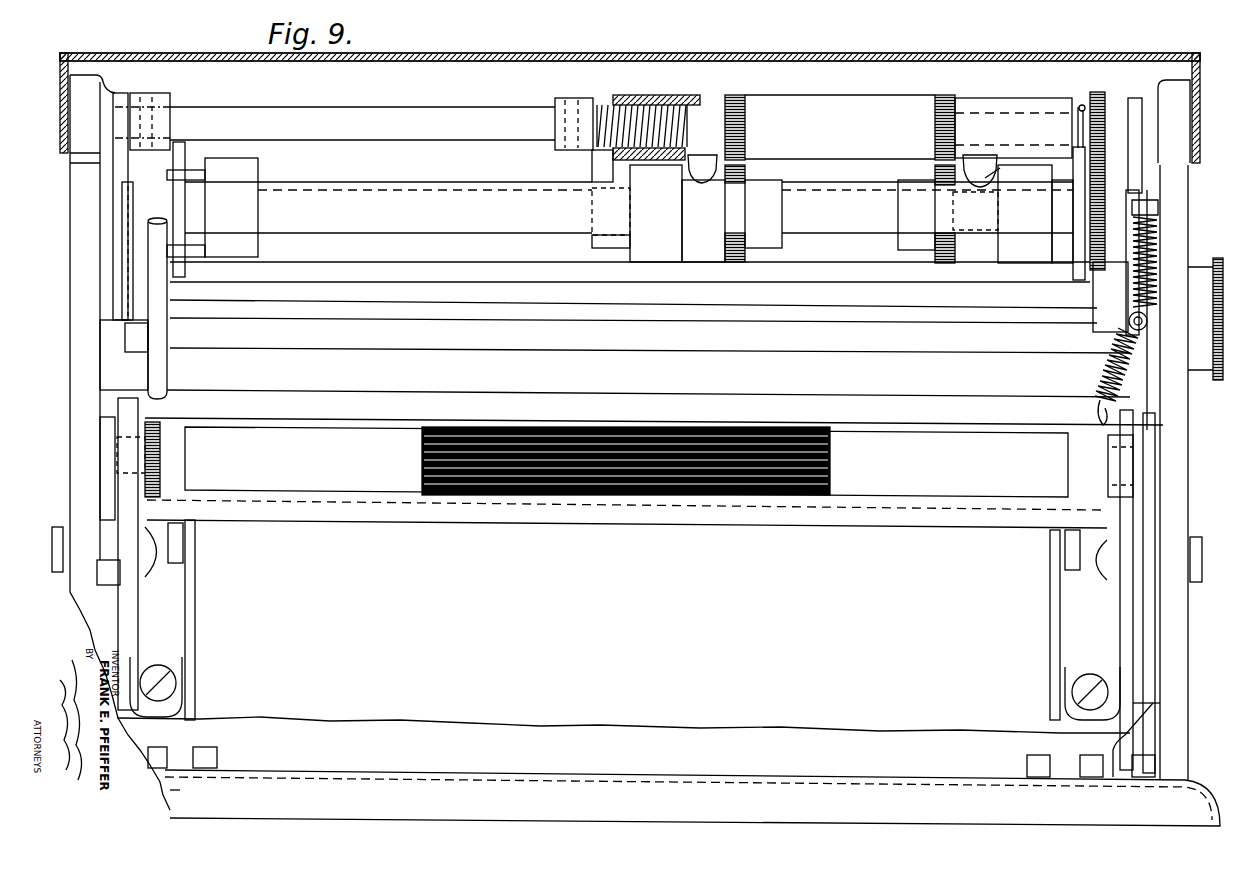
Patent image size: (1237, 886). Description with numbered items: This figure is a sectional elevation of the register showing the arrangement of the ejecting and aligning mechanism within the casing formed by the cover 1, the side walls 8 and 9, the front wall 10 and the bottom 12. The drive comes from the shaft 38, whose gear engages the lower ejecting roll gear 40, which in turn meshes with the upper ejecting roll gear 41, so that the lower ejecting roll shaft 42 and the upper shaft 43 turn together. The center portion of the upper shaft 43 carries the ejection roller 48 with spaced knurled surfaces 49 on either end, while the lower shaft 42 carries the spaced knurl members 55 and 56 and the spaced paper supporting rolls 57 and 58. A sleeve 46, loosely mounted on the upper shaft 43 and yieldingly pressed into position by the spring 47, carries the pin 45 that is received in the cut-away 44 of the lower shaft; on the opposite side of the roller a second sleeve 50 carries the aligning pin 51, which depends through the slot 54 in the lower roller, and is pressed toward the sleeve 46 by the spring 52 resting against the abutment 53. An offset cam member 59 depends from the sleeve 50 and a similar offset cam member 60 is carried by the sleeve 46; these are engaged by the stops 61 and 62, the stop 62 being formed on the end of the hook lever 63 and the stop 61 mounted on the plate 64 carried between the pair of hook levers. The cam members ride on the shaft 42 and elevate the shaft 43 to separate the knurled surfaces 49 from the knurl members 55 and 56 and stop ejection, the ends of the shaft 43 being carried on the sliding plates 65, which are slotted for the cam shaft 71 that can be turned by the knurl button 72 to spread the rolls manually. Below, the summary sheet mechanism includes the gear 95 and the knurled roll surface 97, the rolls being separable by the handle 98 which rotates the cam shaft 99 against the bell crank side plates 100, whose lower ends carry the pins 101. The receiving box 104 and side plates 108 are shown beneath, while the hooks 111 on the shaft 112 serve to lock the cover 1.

The cover 1 is at (82, 30).
The side wall 8 is at (1176, 196).
The side wall 9 is at (75, 205).
The front wall 10 is at (405, 80).
The bottom 12 is at (503, 775).
The shaft 38 is at (422, 244).
The lower ejecting roll gear 40 is at (1108, 196).
The upper ejecting roll gear 41 is at (1138, 100).
The lower ejecting roll shaft 42 is at (470, 188).
The upper shaft 43 is at (465, 92).
The cut-away 44 is at (995, 175).
The pin 45 is at (980, 160).
The sleeve 46 is at (1010, 90).
The spring 47 is at (1078, 106).
The ejection roller 48 is at (840, 112).
The knurled surfaces 49 is at (745, 130).
The second sleeve 50 is at (688, 95).
The aligning pin 51 is at (680, 185).
The spring 52 is at (600, 105).
The abutment 53 is at (560, 100).
The slot 54 is at (715, 240).
The knurl member 55 is at (728, 186).
The knurl member 56 is at (935, 165).
The paper supporting roll 57 is at (1028, 255).
The paper supporting roll 58 is at (658, 242).
The offset cam member 59 is at (595, 152).
The offset cam member 60 is at (1105, 150).
The stop 61 is at (595, 190).
The stop 62 is at (180, 142).
The hook lever 63 is at (210, 215).
The plate 64 is at (322, 160).
The sliding plate 65 is at (150, 86).
The cam shaft 71 is at (530, 345).
The knurl button 72 is at (1210, 370).
The gear 95 is at (160, 450).
The knurled portion 97 is at (688, 475).
The handle 98 is at (163, 330).
The cam shaft 99 is at (262, 375).
The bell crank side plate 100 is at (125, 448).
The pin 101 is at (157, 668).
The receiving box 104 is at (995, 710).
The side plate 108 is at (178, 545).
The hook 111 is at (125, 235).
The shaft 112 is at (817, 300).